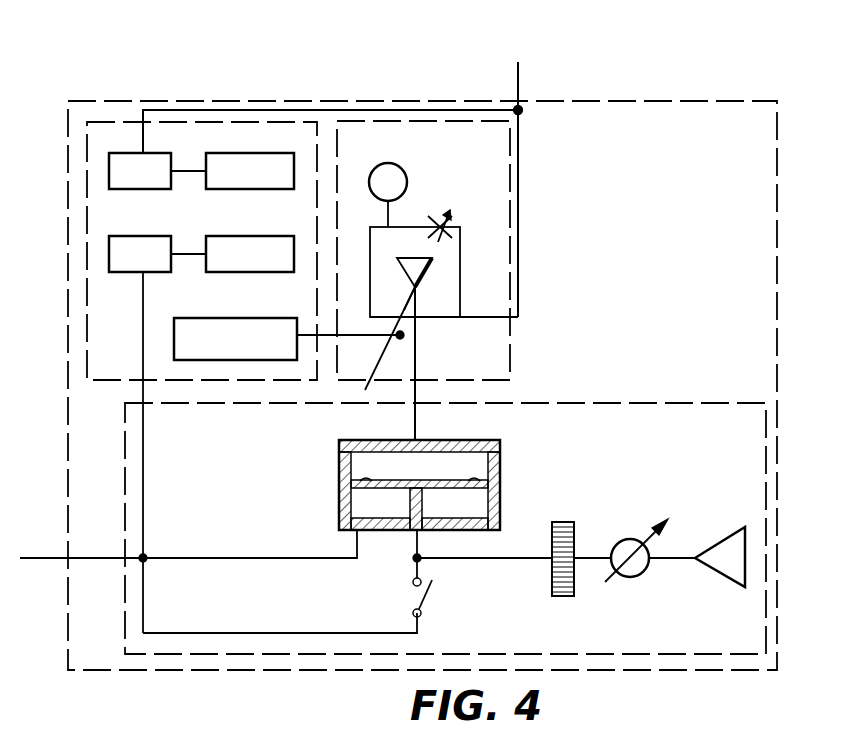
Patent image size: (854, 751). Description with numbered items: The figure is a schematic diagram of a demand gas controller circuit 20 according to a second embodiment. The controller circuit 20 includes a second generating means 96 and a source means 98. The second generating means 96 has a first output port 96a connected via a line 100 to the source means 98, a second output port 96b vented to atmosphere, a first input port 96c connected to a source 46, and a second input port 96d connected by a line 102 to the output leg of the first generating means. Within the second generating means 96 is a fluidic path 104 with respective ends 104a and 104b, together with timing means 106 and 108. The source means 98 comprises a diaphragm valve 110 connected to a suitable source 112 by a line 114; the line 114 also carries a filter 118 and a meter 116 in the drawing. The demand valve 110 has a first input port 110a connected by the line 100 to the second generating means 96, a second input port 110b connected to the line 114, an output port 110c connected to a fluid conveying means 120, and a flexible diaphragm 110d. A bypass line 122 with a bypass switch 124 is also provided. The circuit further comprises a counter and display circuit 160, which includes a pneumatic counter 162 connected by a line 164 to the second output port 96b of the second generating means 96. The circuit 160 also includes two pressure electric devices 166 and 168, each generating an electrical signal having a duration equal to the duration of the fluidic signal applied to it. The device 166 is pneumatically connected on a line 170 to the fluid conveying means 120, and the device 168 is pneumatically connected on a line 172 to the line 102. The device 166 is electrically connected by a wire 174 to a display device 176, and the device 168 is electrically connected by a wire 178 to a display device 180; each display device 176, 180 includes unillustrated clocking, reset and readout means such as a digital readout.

The controller circuit 20 is at (68, 138).
The counter and display circuit 160 is at (87, 322).
The line 102 is at (519, 149).
The source means 98 is at (672, 403).
The line 172 is at (318, 110).
The second generating means 96 is at (488, 110).
The first output port 96a is at (419, 382).
The second output port 96b is at (372, 380).
The first input port 96c is at (419, 304).
The second input port 96d is at (452, 314).
The wire 178 is at (188, 167).
The display device 180 is at (259, 153).
The pressure electric device 168 is at (166, 190).
The pressure electric device 166 is at (134, 236).
The display device 176 is at (258, 235).
The wire 174 is at (190, 258).
The pneumatic counter 162 is at (280, 318).
The line 164 is at (346, 336).
The line 170 is at (143, 437).
The source 46 is at (411, 256).
The timing means 108 is at (406, 174).
The timing means 106 is at (447, 205).
The fluidic path 104 is at (372, 226).
The end of fluidic path 104a is at (447, 317).
The end of fluidic path 104b is at (399, 312).
The line 100 is at (422, 410).
The diaphragm valve 110 is at (415, 483).
The first input port 110a is at (409, 440).
The second input port 110b is at (424, 533).
The output port 110c is at (354, 538).
The flexible diaphragm 110d is at (404, 476).
The fluid conveying means 120 is at (56, 558).
The bypass line 122 is at (312, 632).
The bypass switch 124 is at (427, 596).
The line 114 is at (493, 562).
The filter (118') 118 is at (574, 524).
The meter (116') 116 is at (632, 538).
The source 112 is at (714, 542).